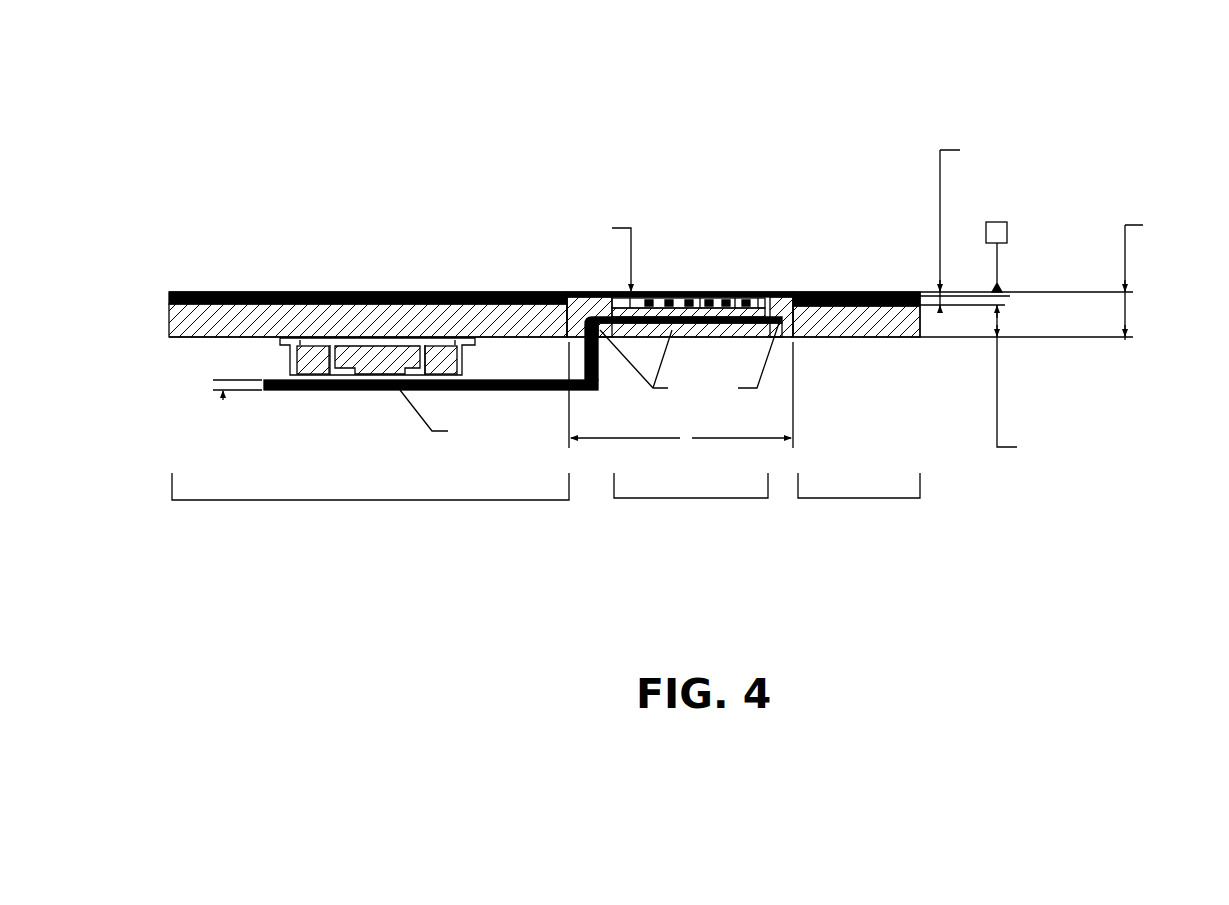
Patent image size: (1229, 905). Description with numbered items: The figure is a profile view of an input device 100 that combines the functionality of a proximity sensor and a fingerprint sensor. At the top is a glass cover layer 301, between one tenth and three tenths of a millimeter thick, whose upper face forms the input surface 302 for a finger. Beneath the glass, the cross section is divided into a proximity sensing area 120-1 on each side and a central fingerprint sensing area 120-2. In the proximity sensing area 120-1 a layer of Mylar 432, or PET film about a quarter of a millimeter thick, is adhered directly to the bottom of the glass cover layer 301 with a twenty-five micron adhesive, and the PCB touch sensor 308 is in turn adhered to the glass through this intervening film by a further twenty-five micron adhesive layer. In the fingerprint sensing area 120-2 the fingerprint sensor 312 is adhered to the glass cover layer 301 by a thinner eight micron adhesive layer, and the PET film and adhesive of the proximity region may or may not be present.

The input device 100 is at (318, 68).
The glass cover layer 301 is at (166, 294).
The input surface 302 is at (305, 292).
The PCB touch sensor 308 is at (184, 341).
The fingerprint sensor 312 is at (706, 300).
The layer of Mylar 432 is at (850, 307).
The proximity sensing area 120-1 is at (370, 500).
The fingerprint sensing area 120-2 is at (691, 511).